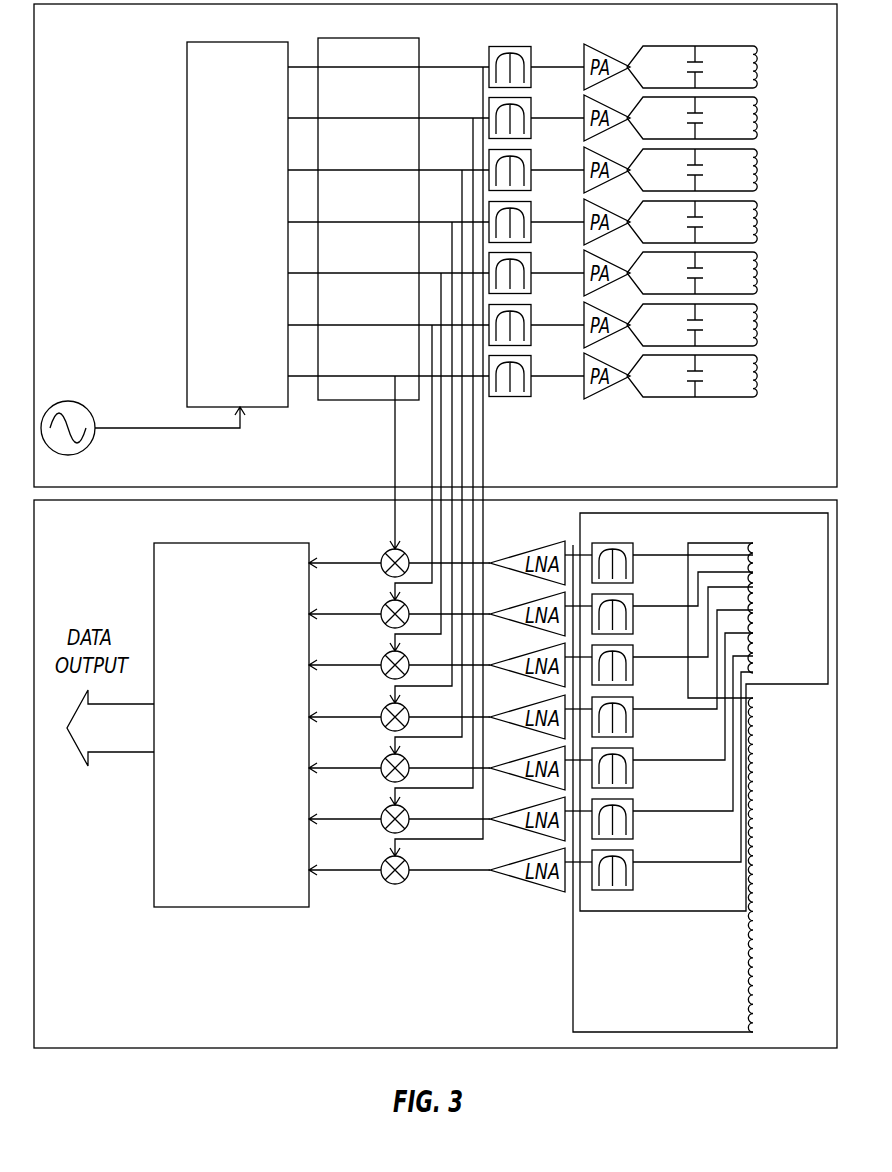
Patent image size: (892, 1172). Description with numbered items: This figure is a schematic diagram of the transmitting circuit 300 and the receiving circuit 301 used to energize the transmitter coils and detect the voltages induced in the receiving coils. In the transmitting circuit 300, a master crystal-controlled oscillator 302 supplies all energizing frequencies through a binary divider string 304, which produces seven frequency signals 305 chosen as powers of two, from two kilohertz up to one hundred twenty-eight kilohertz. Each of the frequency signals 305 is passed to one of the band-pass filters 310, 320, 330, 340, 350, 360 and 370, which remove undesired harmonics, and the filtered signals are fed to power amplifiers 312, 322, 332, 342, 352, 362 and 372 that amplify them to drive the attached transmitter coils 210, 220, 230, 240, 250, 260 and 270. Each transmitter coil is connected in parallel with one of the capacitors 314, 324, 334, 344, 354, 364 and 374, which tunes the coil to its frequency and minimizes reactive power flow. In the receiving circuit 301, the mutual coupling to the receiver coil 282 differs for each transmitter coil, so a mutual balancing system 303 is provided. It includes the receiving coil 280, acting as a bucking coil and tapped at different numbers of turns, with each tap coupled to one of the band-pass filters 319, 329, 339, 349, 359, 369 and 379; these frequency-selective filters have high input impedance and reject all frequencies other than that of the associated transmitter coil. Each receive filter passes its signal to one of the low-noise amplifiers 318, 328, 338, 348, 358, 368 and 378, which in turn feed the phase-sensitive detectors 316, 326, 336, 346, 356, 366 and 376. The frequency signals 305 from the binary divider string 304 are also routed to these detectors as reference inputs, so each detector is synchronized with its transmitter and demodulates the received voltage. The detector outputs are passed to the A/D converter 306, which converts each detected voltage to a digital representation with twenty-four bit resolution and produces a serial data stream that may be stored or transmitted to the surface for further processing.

The transmitting circuit 300 is at (107, 89).
The receiving circuit 301 is at (102, 1030).
The master crystal-controlled oscillator 302 is at (70, 402).
The mutual balancing system 303 is at (640, 911).
The binary divider string 304 is at (223, 150).
The frequency signals 305 is at (422, 57).
The A/D converter 306 is at (216, 701).
The band-pass filter 310 is at (527, 356).
The band-pass filter 320 is at (527, 305).
The band-pass filter 330 is at (527, 253).
The band-pass filter 340 is at (527, 202).
The band-pass filter 350 is at (527, 150).
The band-pass filter 360 is at (527, 98).
The band-pass filter 370 is at (527, 47).
The power amplifier 312 is at (674, 376).
The power amplifier 322 is at (674, 325).
The power amplifier 332 is at (674, 273).
The power amplifier 342 is at (674, 222).
The power amplifier 352 is at (674, 170).
The power amplifier 362 is at (674, 118).
The power amplifier 372 is at (674, 67).
The capacitor 314 is at (732, 376).
The capacitor 324 is at (732, 325).
The capacitor 334 is at (732, 273).
The capacitor 344 is at (732, 222).
The capacitor 354 is at (732, 170).
The capacitor 364 is at (732, 118).
The capacitor 374 is at (732, 67).
The phase-sensitive detector 316 is at (399, 485).
The phase-sensitive detector 326 is at (399, 485).
The phase-sensitive detector 336 is at (399, 486).
The phase-sensitive detector 346 is at (399, 486).
The phase-sensitive detector 356 is at (399, 486).
The phase-sensitive detector 366 is at (399, 486).
The phase-sensitive detector 376 is at (399, 486).
The low-noise amplifier 318 is at (546, 891).
The low-noise amplifier 328 is at (546, 840).
The low-noise amplifier 338 is at (546, 789).
The low-noise amplifier 348 is at (546, 738).
The low-noise amplifier 358 is at (546, 686).
The low-noise amplifier 368 is at (546, 635).
The low-noise amplifier 378 is at (546, 584).
The band-pass filter 319 is at (625, 890).
The band-pass filter 329 is at (625, 839).
The band-pass filter 339 is at (625, 788).
The band-pass filter 349 is at (625, 737).
The band-pass filter 359 is at (625, 685).
The band-pass filter 369 is at (625, 634).
The band-pass filter 379 is at (625, 583).
The transmitter coil 210 is at (758, 385).
The transmitter coil 220 is at (758, 334).
The transmitter coil 230 is at (758, 282).
The transmitter coil 240 is at (758, 231).
The transmitter coil 250 is at (758, 179).
The transmitter coil 260 is at (758, 127).
The transmitter coil 270 is at (758, 76).
The receiving coil 280 is at (762, 625).
The receiver coil 282 is at (762, 862).